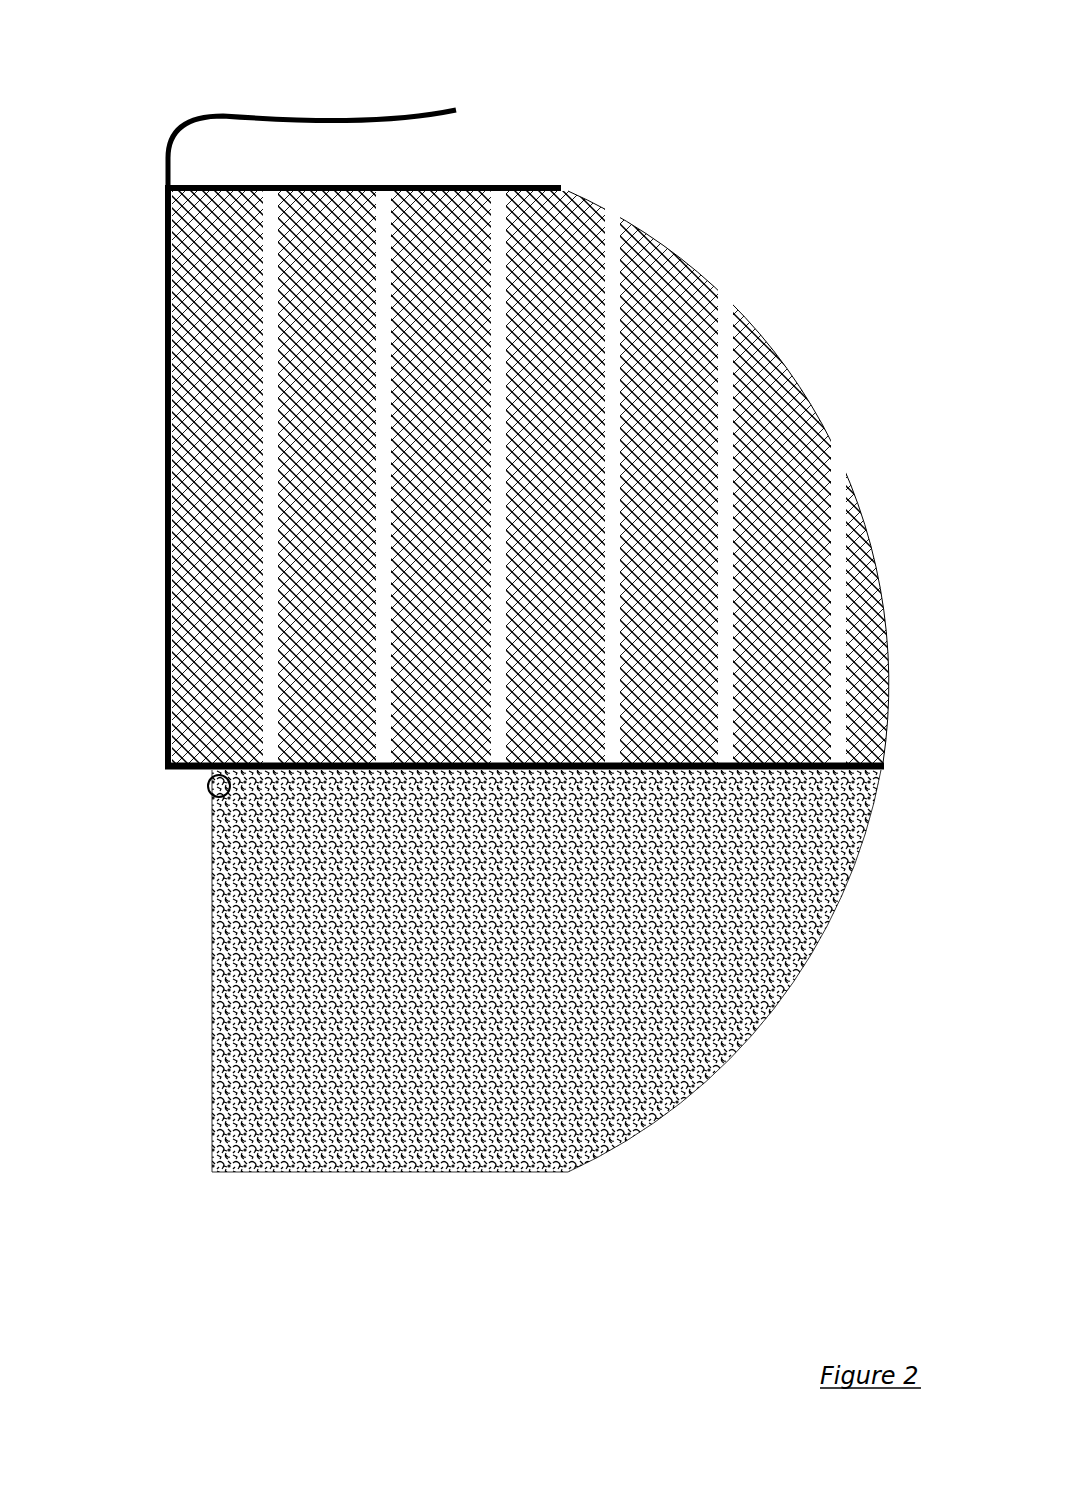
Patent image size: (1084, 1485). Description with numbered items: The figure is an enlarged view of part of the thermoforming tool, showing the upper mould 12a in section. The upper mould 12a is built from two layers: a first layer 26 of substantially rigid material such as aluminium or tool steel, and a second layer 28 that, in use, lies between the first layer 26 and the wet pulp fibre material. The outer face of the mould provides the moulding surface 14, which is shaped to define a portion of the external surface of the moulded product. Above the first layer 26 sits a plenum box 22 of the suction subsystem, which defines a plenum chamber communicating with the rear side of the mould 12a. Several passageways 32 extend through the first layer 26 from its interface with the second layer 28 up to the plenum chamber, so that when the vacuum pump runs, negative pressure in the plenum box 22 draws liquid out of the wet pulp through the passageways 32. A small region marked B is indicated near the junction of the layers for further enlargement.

The upper mould 12a is at (508, 683).
The moulding surface 14 is at (513, 1057).
The plenum box 22 is at (235, 100).
The first layer 26 is at (488, 405).
The second layer 28 is at (244, 968).
The passageways 32 is at (378, 265).
The detail region B is at (200, 780).